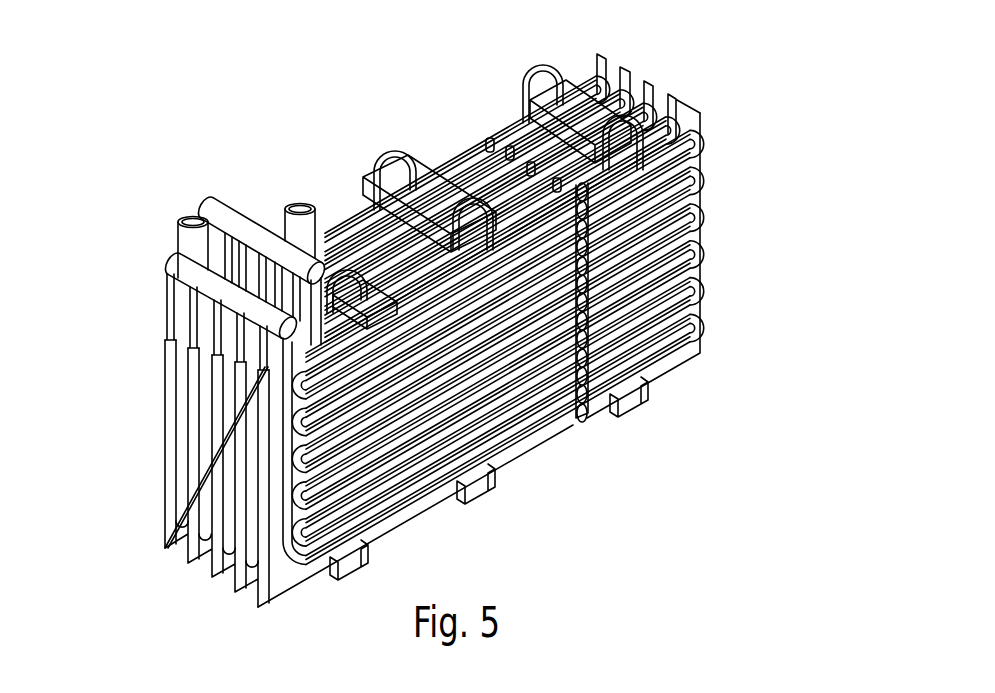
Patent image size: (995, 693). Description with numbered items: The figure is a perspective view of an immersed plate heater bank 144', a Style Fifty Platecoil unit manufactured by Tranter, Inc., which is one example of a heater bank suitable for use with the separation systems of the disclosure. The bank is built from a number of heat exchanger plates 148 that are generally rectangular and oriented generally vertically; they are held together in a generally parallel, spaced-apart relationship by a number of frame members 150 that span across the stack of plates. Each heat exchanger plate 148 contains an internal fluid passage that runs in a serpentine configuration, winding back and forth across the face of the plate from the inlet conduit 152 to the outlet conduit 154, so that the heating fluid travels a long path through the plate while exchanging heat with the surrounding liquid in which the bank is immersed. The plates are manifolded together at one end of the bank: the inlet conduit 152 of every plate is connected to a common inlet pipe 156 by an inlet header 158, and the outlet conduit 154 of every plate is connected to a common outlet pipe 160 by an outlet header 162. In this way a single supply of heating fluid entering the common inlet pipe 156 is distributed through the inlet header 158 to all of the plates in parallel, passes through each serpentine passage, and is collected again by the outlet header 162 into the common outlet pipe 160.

The immersed plate heater bank 144' is at (524, 303).
The heat exchanger plate 148 is at (700, 113).
The frame member 150 is at (565, 103).
The inlet conduit 152 is at (227, 325).
The outlet conduit 154 is at (265, 267).
The common inlet pipe 156 is at (186, 218).
The inlet header 158 is at (198, 287).
The common outlet pipe 160 is at (294, 206).
The outlet header 162 is at (215, 200).